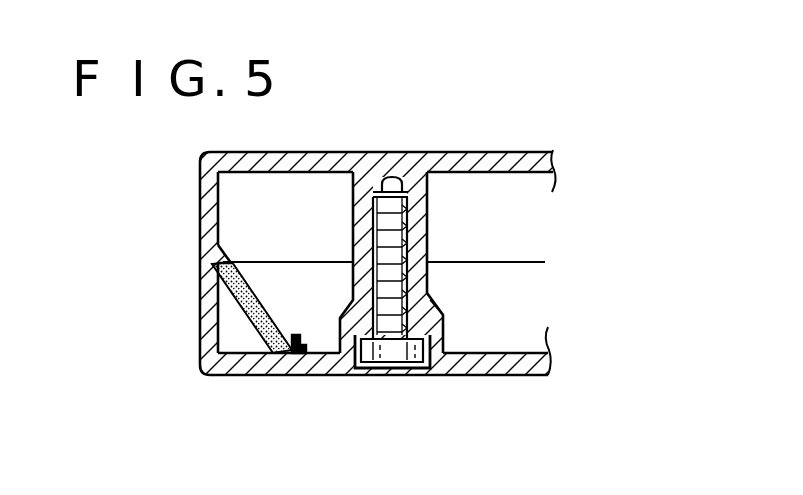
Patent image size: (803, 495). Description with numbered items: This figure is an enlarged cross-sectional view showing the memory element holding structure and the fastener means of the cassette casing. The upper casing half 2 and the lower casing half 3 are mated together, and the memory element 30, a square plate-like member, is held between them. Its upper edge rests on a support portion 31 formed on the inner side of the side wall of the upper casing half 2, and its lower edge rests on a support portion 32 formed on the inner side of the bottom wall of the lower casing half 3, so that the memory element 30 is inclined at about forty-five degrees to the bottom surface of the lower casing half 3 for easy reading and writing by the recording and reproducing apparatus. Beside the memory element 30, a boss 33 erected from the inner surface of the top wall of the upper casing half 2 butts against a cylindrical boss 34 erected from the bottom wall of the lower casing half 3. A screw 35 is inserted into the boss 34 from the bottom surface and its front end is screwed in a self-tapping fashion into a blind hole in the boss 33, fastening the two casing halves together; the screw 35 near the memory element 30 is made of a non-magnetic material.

The upper casing half 2 is at (477, 153).
The lower casing half 3 is at (488, 368).
The memory element 30 is at (266, 317).
The support portion 31 is at (229, 258).
The support portion 32 is at (306, 334).
The boss 33 is at (427, 231).
The cylindrical boss 34 is at (443, 313).
The screw 35 is at (390, 350).